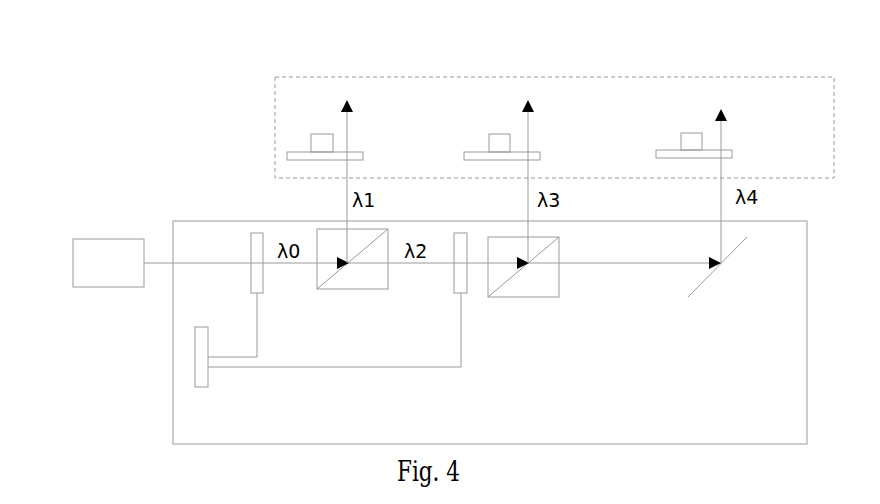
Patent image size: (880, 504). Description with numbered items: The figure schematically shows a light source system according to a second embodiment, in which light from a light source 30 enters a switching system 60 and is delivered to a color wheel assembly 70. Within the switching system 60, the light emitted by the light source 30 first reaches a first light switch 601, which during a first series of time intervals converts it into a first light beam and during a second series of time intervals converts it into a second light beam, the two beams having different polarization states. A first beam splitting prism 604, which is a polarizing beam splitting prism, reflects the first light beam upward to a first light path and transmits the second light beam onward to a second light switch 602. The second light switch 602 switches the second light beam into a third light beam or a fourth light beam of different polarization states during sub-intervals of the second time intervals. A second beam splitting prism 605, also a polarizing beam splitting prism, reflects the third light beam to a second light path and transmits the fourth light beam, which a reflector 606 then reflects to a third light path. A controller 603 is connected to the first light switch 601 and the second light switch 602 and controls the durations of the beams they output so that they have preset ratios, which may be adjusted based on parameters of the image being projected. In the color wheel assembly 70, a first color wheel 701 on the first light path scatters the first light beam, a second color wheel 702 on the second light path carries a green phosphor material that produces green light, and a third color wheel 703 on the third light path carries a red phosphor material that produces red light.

The light source 30 is at (106, 241).
The switching system 60 is at (184, 225).
The color wheel assembly 70 is at (285, 77).
The first light switch 601 is at (261, 294).
The second light switch 602 is at (465, 295).
The controller 603 is at (202, 368).
The first beam splitting prism 604 is at (357, 284).
The second beam splitting prism 605 is at (552, 283).
The reflector 606 is at (702, 282).
The first color wheel 701 is at (355, 153).
The second color wheel 702 is at (533, 153).
The third color wheel 703 is at (727, 153).